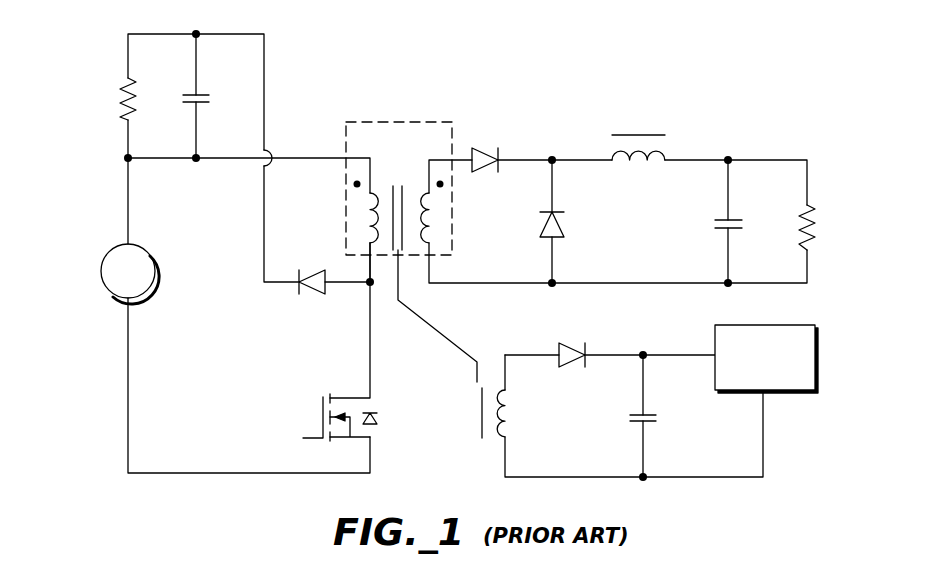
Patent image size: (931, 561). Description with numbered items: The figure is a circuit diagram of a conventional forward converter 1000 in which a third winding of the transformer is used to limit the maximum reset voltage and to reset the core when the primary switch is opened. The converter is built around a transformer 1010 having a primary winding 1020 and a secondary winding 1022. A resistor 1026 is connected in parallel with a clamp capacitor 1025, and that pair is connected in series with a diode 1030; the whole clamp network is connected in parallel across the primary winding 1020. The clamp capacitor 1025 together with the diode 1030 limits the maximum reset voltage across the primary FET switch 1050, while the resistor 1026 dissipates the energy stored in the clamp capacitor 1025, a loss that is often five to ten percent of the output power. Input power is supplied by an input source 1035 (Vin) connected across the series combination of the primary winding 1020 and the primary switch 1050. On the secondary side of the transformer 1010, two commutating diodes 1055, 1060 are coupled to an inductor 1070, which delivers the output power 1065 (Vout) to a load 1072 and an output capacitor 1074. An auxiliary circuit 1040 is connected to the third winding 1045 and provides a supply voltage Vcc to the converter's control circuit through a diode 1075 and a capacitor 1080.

The forward converter 1000 is at (733, 49).
The transformer 1010 is at (375, 123).
The primary winding 1020 is at (373, 226).
The secondary winding 1022 is at (424, 226).
The clamp capacitor 1025 is at (203, 96).
The resistor 1026 is at (119, 97).
The diode 1030 is at (297, 291).
The input voltage source Vin 1035 is at (113, 295).
The auxiliary circuit 1040 is at (659, 353).
The third winding 1045 is at (500, 420).
The primary FET switch 1050 is at (318, 436).
The commutating diode 1055 is at (500, 155).
The commutating diode 1060 is at (560, 218).
The output voltage Vout 1065 is at (812, 122).
The inductor 1070 is at (646, 135).
The load 1072 is at (819, 222).
The output capacitor 1074 is at (734, 232).
The diode 1075 is at (568, 343).
The capacitor 1080 is at (654, 424).